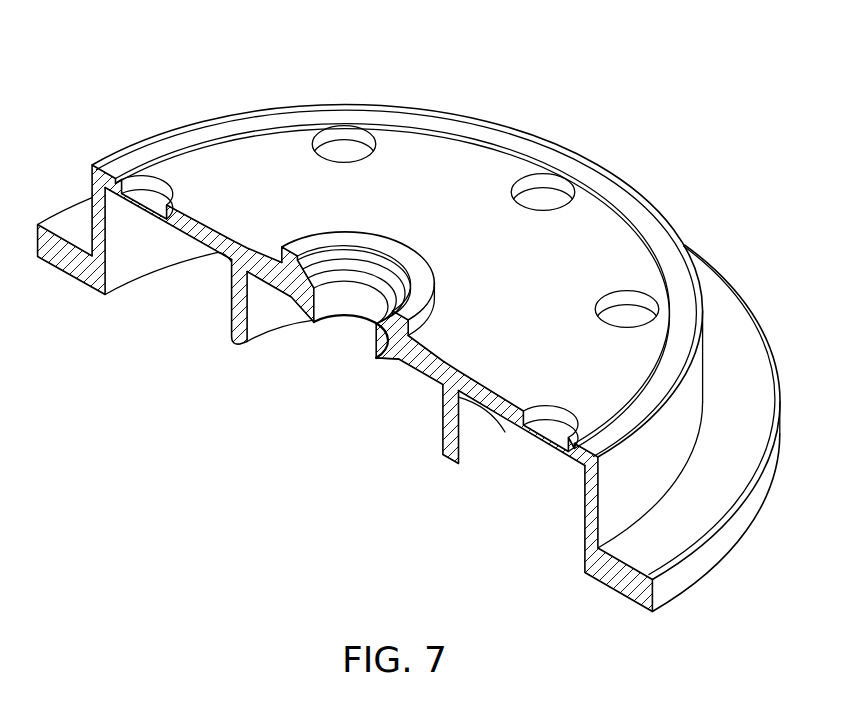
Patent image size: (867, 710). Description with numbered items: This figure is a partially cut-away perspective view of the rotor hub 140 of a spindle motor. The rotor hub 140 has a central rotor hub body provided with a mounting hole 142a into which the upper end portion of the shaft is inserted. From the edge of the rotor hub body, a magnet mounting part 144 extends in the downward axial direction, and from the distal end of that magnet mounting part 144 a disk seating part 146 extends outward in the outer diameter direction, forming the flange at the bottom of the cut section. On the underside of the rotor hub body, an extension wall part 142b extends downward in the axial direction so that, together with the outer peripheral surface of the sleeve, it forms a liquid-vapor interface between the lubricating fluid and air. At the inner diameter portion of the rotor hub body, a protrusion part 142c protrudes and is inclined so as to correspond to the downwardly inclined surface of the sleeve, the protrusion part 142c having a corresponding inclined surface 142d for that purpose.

The rotor hub 140 is at (432, 53).
The mounting hole 142a is at (432, 271).
The extension wall part 142b is at (456, 432).
The protrusion part 142c is at (376, 360).
The corresponding inclined surface 142d is at (397, 361).
The magnet mounting part 144 is at (586, 510).
The disk seating part 146 is at (615, 590).